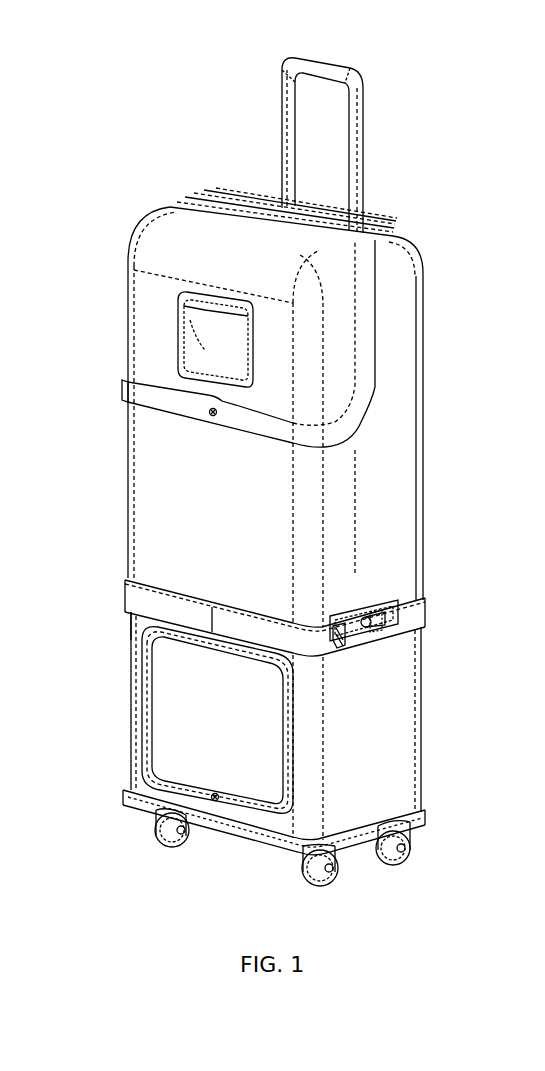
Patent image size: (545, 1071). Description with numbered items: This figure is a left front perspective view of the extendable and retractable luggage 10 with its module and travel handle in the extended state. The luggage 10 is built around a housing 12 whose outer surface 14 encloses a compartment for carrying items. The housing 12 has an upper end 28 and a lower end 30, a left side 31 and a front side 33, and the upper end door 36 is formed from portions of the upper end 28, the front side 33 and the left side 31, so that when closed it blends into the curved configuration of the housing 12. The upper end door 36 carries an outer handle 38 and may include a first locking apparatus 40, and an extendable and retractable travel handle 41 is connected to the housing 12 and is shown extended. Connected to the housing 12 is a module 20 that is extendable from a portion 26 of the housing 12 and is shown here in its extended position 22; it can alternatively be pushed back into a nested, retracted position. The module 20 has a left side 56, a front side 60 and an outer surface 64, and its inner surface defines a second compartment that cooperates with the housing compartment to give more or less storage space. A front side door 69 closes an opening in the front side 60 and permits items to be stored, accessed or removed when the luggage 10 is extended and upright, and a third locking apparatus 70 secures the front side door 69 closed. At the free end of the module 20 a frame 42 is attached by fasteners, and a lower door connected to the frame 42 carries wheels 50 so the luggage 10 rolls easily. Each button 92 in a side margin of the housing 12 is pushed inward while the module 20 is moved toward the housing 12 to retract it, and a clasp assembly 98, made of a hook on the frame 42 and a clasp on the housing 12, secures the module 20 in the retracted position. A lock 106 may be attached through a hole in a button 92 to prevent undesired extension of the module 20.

The extendable and retractable luggage 10 is at (475, 192).
The housing 12 is at (403, 560).
The outer surface 14 is at (402, 315).
The module 20 is at (404, 743).
The extended position 22 is at (477, 375).
The portion of the housing 26 is at (122, 590).
The upper end 28 is at (208, 190).
The lower end 30 is at (132, 578).
The left side 31 is at (405, 497).
The front side 33 is at (158, 476).
The upper end door 36 is at (153, 240).
The outer handle 38 is at (203, 323).
The first locking apparatus 40 is at (213, 418).
The travel handle 41 is at (370, 113).
The frame 42 is at (422, 822).
The wheels 50 is at (178, 850).
The left side 56 is at (405, 685).
The front side 60 is at (140, 641).
The outer surface 64 is at (402, 780).
The front side door 69 is at (157, 702).
The third locking apparatus 70 is at (217, 792).
The button 92 is at (382, 621).
The clasp assembly 98 is at (343, 653).
The lock 106 is at (404, 619).